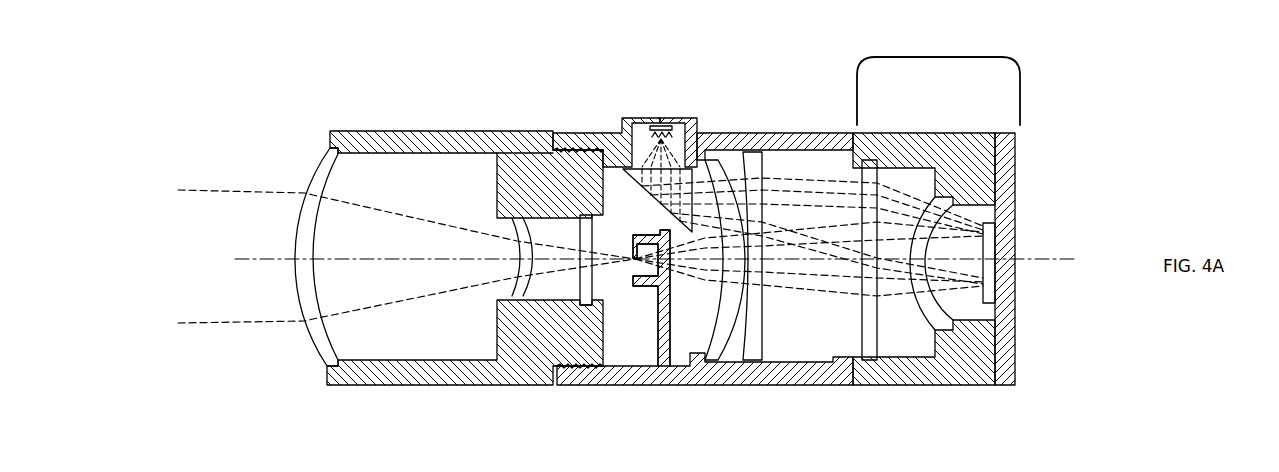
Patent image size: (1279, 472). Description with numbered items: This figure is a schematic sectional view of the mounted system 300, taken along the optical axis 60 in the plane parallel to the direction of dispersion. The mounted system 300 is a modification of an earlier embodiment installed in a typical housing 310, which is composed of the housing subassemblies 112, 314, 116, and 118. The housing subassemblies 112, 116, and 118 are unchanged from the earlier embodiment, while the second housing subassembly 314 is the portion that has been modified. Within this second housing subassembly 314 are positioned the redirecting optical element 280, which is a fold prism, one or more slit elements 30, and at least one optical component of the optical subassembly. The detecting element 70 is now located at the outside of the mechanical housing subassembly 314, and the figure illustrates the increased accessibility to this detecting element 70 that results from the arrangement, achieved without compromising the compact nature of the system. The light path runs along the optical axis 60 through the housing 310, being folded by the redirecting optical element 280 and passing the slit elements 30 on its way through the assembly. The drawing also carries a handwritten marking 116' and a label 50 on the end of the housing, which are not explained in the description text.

The mounted system 300 is at (305, 109).
The housing 310 is at (1025, 390).
The housing subassembly 112 is at (448, 131).
The detecting element 70 is at (662, 118).
The redirecting optical element 280 is at (637, 181).
The slit element 30 is at (632, 272).
The second housing subassembly 314 is at (745, 133).
The housing subassembly 116 is at (907, 223).
The rear lens section 116' is at (967, 82).
The housing subassembly 118 is at (1018, 216).
The detector 50 is at (998, 280).
The optical axis 60 is at (262, 257).